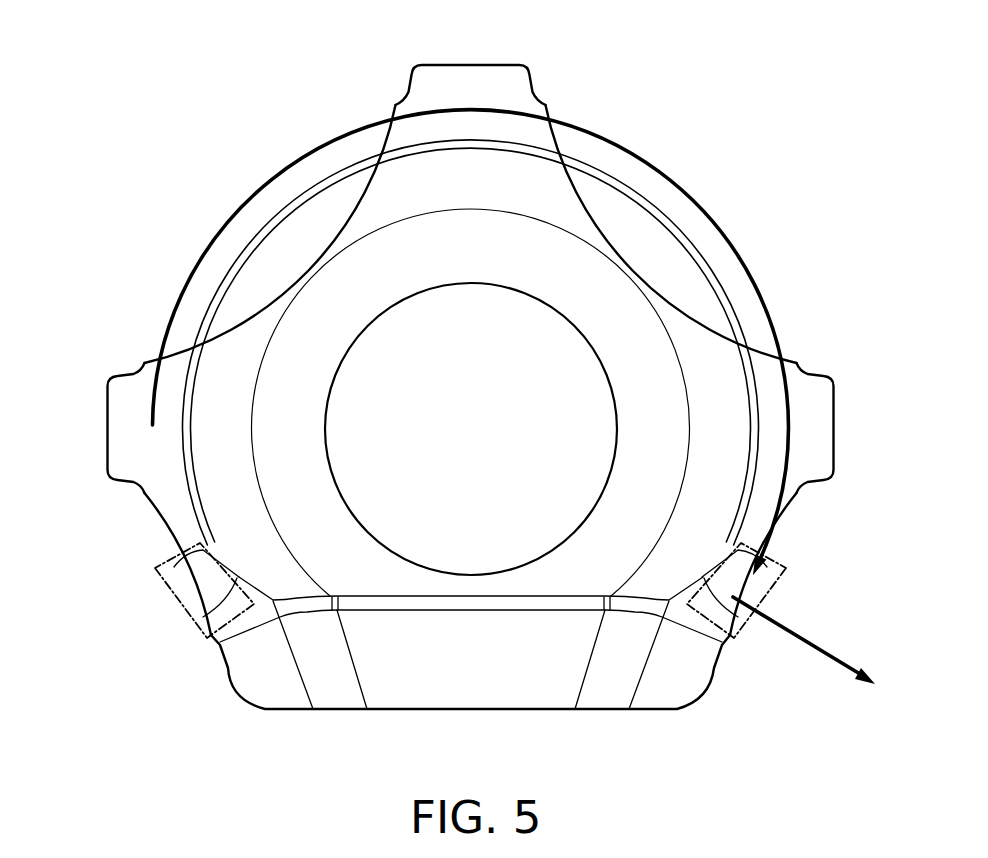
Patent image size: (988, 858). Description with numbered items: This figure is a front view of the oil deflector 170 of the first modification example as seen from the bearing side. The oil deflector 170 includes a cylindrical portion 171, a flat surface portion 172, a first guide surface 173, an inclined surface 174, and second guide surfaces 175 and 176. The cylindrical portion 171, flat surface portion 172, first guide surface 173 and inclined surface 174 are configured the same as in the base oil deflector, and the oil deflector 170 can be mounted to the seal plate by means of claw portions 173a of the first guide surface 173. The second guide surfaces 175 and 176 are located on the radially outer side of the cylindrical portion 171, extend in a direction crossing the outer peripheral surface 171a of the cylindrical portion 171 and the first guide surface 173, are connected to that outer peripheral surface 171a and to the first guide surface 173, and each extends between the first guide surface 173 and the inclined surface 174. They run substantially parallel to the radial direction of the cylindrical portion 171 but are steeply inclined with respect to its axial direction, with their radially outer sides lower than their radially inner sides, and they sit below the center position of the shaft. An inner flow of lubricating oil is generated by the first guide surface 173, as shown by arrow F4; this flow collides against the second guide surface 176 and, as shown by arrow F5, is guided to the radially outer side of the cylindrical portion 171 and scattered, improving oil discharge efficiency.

The oil deflector 170 is at (467, 393).
The cylindrical portion 171 is at (700, 262).
The outer peripheral surface 171a is at (725, 300).
The flat surface portion 172 is at (368, 268).
The first guide surface 173 is at (603, 130).
The claw portion 173a is at (468, 87).
The inclined surface 174 is at (472, 674).
The second guide surface 175 is at (180, 610).
The second guide surface 176 is at (777, 585).
The arrow indicating inner flow F4 is at (168, 313).
The arrow indicating guided oil flow F5 is at (807, 650).